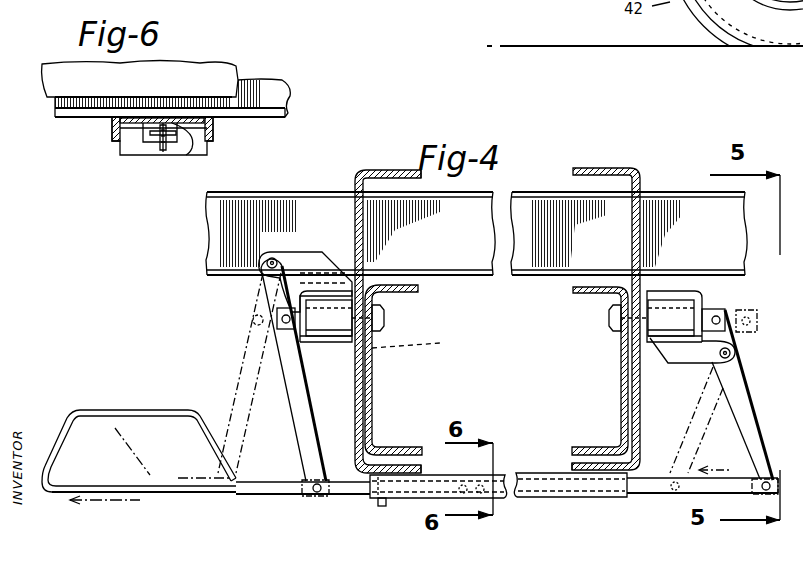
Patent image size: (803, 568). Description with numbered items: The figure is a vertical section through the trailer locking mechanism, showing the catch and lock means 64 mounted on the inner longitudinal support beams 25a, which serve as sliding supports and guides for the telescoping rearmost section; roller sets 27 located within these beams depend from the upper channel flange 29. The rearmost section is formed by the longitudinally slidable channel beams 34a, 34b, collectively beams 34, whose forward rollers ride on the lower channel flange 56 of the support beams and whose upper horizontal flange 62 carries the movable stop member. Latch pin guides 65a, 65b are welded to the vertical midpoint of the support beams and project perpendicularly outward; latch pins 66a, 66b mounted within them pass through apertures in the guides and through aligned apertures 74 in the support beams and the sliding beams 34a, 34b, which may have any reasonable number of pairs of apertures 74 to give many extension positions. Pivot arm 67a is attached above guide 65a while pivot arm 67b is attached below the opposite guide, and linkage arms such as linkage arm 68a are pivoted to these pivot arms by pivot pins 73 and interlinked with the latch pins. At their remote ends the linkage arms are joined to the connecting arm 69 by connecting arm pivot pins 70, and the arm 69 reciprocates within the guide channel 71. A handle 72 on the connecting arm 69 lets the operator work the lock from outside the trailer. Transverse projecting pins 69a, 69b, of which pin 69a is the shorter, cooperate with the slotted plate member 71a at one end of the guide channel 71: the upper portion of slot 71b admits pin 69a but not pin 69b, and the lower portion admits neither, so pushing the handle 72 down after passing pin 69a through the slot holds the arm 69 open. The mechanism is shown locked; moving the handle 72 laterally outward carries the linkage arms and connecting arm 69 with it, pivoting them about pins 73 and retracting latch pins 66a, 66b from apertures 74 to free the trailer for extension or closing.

In FIG. 6, the inner longitudinal support beam 25a is at (262, 88).
In FIG. 4, the inner longitudinal support beam 25a is at (368, 244).
In FIG. 4, the roller set 27 is at (218, 237).
In FIG. 4, the upper channel flange 29 is at (405, 170).
In FIG. 4, the channel beam 34 is at (802, 300).
In FIG. 6, the slidable channel beam 34a is at (218, 66).
In FIG. 4, the slidable channel beam 34a is at (368, 364).
In FIG. 4, the slidable channel beam 34b is at (628, 355).
In FIG. 4, the lower channel flange 56 is at (424, 456).
In FIG. 4, the upper horizontal flange 62 is at (420, 288).
In FIG. 4, the catch and lock means 64 is at (236, 352).
In FIG. 4, the latch pin guide 65a is at (326, 341).
In FIG. 4, the latch pin guide 65b is at (675, 310).
In FIG. 4, the latch pin 66a is at (386, 320).
In FIG. 4, the latch pin 66b is at (608, 320).
In FIG. 4, the pivot arm 67a is at (312, 258).
In FIG. 4, the pivot arm 67b is at (688, 363).
In FIG. 4, the linkage arm 68a is at (298, 418).
In FIG. 6, the connecting arm 69 is at (163, 151).
In FIG. 4, the connecting arm 69 is at (348, 495).
In FIG. 4, the projecting pin 69a is at (463, 484).
In FIG. 6, the projecting pin 69b is at (148, 148).
In FIG. 4, the projecting pin 69b is at (500, 462).
In FIG. 4, the connecting arm pivot pin 70 is at (312, 495).
In FIG. 6, the guide channel 71 is at (213, 134).
In FIG. 4, the guide channel 71 is at (575, 490).
In FIG. 6, the slotted plate member 71a is at (196, 150).
In FIG. 4, the slotted plate member 71a is at (382, 507).
In FIG. 6, the slot 71b is at (176, 153).
In FIG. 4, the handle 72 is at (80, 412).
In FIG. 4, the pivot pin 73 is at (269, 258).
In FIG. 4, the aperture 74 is at (417, 342).